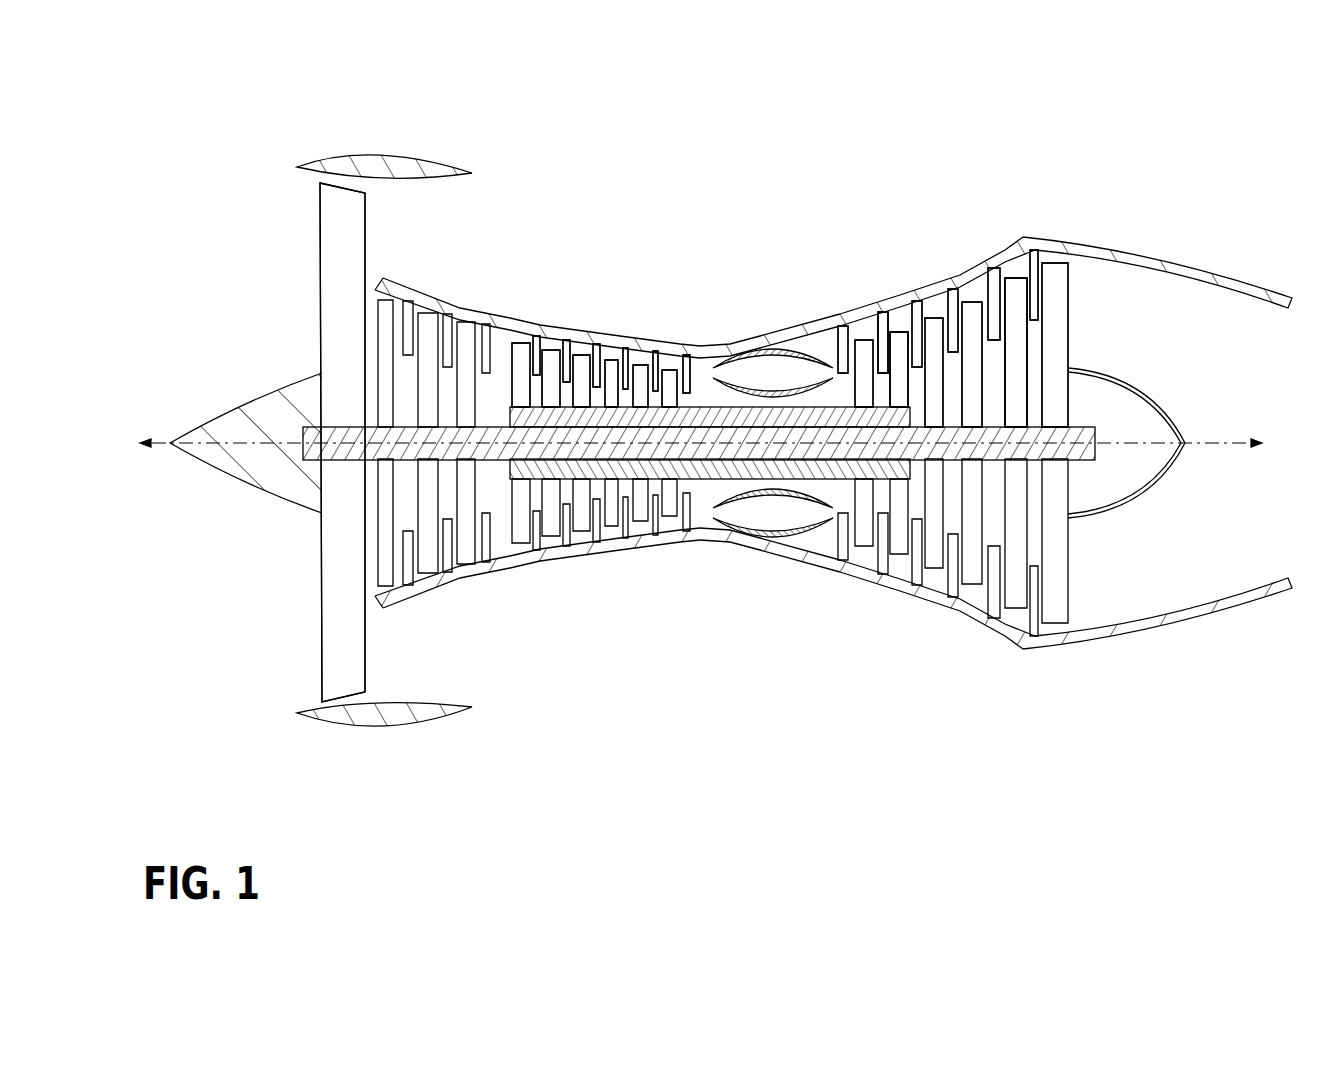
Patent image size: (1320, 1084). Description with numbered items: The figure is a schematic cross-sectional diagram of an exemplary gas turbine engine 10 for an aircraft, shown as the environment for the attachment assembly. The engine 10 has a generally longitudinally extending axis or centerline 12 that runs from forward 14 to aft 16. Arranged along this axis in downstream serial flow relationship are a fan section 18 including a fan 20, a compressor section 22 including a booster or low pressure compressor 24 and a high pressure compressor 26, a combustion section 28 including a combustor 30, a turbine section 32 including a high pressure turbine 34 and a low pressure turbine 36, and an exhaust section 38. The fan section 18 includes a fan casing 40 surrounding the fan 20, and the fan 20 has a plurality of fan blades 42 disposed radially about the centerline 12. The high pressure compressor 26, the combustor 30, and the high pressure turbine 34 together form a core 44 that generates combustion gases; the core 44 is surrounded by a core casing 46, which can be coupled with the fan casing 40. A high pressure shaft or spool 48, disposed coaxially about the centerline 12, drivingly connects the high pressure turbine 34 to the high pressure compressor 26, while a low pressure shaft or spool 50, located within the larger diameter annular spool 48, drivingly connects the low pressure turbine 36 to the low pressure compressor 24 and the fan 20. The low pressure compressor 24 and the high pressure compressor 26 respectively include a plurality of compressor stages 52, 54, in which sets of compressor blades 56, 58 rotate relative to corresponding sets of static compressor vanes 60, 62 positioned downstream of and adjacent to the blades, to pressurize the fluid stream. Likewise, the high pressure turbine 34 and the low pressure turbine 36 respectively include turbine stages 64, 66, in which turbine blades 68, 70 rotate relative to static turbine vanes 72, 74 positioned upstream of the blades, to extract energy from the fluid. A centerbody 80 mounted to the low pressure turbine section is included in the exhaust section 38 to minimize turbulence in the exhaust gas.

The gas turbine engine 10 is at (194, 92).
The centerline 12 is at (228, 440).
The forward 14 is at (682, 444).
The aft 16 is at (1277, 444).
The fan section 18 is at (370, 770).
The fan 20 is at (316, 243).
The compressor section 22 is at (375, 770).
The low pressure compressor 24 is at (503, 582).
The high pressure compressor 26 is at (649, 553).
The combustion section 28 is at (855, 770).
The combustor 30 is at (829, 350).
The turbine section 32 is at (1060, 770).
The high pressure turbine 34 is at (836, 582).
The low pressure turbine 36 is at (958, 616).
The exhaust section 38 is at (1065, 770).
The fan casing 40 is at (383, 152).
The fan blades 42 is at (333, 648).
The core 44 is at (910, 643).
The core casing 46 is at (752, 336).
The HP shaft or spool 48 is at (700, 403).
The LP shaft or spool 50 is at (490, 425).
The compressor stage 52 is at (376, 265).
The compressor stage 54 is at (523, 310).
The compressor blades 56 is at (390, 302).
The compressor blades 58 is at (540, 348).
The static compressor vanes 60 is at (410, 315).
The static compressor vanes 62 is at (548, 345).
The turbine stage 64 is at (868, 302).
The turbine stage 66 is at (988, 251).
The turbine blades 68 is at (890, 345).
The turbine blades 70 is at (1012, 300).
The static turbine vanes 72 is at (886, 330).
The static turbine vanes 74 is at (1000, 258).
The centerbody 80 is at (1108, 375).